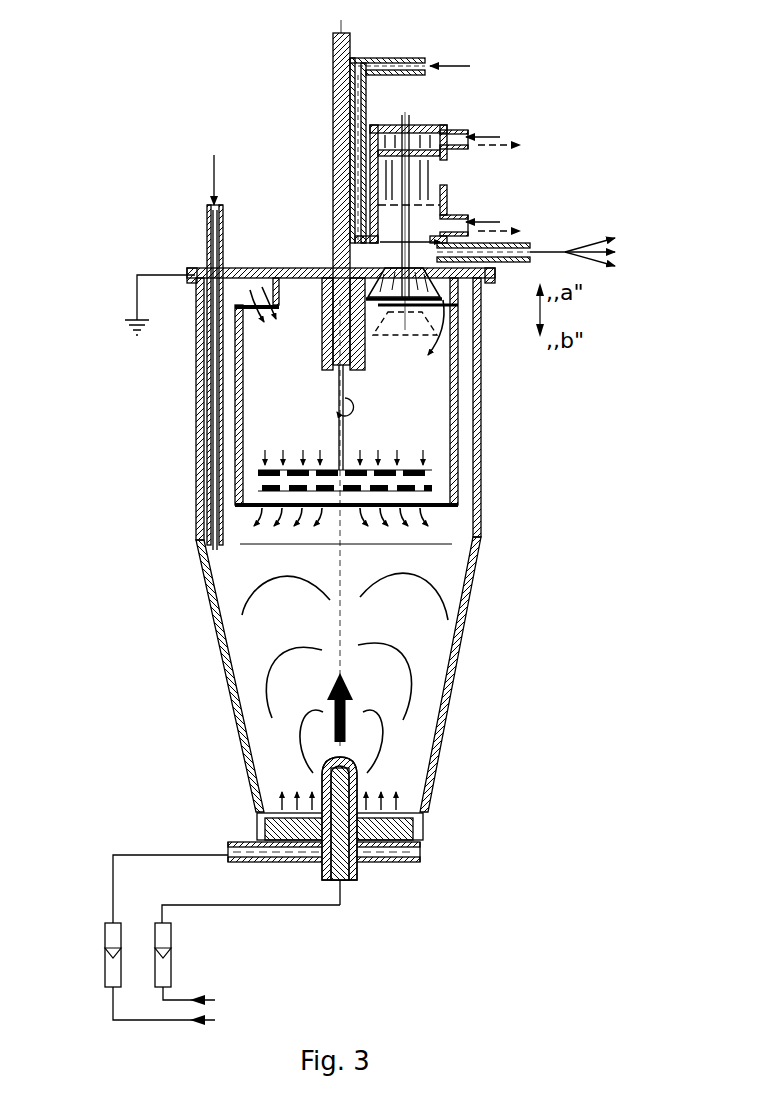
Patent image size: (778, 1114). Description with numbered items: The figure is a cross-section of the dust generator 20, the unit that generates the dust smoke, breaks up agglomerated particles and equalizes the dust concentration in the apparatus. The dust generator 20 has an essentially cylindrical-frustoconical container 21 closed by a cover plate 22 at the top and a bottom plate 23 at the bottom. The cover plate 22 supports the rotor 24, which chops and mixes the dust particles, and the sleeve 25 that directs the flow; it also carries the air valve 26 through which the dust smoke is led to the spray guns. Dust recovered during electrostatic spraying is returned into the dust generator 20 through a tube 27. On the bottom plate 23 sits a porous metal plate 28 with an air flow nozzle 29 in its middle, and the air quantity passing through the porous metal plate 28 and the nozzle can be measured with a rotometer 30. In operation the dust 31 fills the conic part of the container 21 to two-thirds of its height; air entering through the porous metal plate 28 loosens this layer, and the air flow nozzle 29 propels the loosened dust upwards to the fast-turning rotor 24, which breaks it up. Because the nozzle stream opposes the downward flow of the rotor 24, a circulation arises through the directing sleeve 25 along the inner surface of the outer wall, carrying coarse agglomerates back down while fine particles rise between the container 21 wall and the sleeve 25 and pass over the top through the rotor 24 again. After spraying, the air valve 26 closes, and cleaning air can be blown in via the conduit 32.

The dust generator 20 is at (482, 455).
The container 21 is at (483, 535).
The cover plate 22 is at (287, 268).
The bottom plate 23 is at (390, 862).
The rotor 24 is at (262, 493).
The sleeve 25 is at (225, 410).
The air valve 26 is at (447, 183).
The tube 27 is at (207, 240).
The porous metal plate 28 is at (422, 820).
The air flow nozzle 29 is at (355, 880).
The rotometer 30 is at (160, 935).
The dust 31 is at (425, 678).
The conduit 32 is at (410, 58).